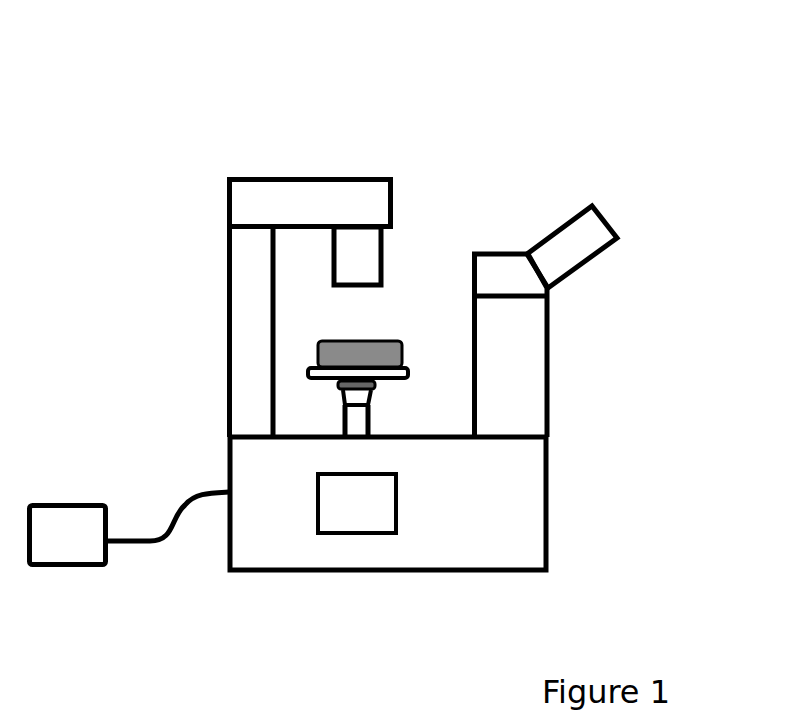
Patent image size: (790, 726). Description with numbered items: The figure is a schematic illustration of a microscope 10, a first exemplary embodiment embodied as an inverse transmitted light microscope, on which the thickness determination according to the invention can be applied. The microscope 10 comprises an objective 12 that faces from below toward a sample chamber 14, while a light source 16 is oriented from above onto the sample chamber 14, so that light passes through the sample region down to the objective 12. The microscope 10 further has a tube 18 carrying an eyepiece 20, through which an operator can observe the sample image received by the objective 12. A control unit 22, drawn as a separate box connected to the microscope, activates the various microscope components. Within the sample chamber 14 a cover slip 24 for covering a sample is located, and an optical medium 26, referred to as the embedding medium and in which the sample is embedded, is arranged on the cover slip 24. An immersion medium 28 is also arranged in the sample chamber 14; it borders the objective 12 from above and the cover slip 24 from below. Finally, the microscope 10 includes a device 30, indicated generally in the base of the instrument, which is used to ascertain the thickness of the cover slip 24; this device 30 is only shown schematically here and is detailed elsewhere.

The microscope 10 is at (171, 124).
The objective 12 is at (333, 408).
The sample chamber 14 is at (397, 321).
The light source 16 is at (393, 202).
The tube 18 is at (560, 305).
The eyepiece 20 is at (596, 214).
The control unit 22 is at (130, 528).
The cover slip 24 is at (304, 372).
The optical medium 26 is at (315, 342).
The immersion medium 28 is at (375, 384).
The device 30 is at (357, 503).